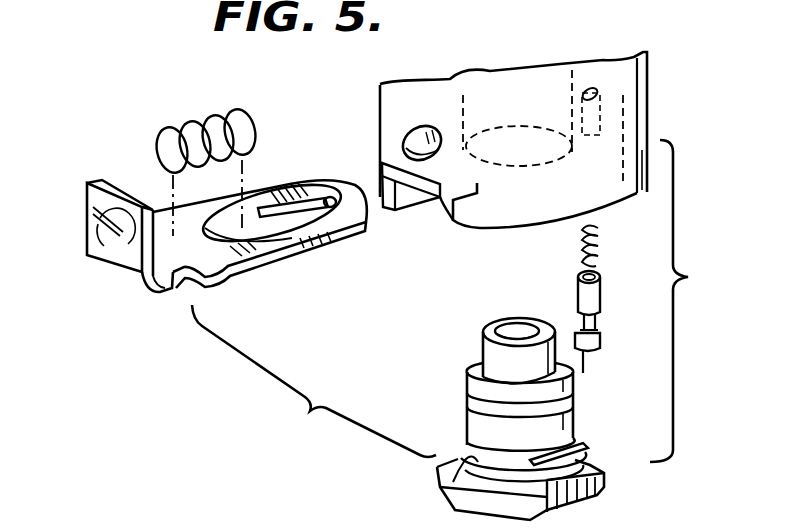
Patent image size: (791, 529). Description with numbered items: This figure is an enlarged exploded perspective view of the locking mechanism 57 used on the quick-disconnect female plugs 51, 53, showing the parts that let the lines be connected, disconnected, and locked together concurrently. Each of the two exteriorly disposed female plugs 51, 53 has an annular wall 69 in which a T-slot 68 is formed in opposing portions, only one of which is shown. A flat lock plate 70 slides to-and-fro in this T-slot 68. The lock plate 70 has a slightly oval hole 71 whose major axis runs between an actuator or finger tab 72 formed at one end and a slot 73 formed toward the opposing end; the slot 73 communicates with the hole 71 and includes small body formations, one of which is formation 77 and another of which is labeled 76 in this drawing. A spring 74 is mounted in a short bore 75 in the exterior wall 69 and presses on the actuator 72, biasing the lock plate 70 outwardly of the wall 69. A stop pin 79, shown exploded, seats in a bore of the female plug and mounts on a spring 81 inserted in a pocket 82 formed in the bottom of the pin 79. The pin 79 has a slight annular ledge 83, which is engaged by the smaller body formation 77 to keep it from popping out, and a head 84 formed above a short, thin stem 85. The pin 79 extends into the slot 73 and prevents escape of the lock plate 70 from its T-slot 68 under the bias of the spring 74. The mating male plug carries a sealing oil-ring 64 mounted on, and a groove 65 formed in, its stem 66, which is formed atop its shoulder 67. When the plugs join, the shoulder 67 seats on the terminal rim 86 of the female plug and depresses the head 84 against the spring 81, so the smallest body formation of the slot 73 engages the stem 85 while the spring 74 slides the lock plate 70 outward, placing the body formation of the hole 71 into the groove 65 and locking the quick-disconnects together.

The female plug 51 is at (405, 97).
The female plug 53 is at (513, 137).
The mechanism 57 is at (125, 317).
The sealing oil-ring 64 is at (470, 412).
The groove 65 is at (586, 442).
The stem 66 is at (470, 436).
The shoulder 67 is at (453, 482).
The T-slot 68 is at (663, 150).
The annular wall 69 is at (623, 93).
The lock plate 70 is at (217, 259).
The hole 71 is at (260, 210).
The actuator or finger tab 72 is at (92, 205).
The slot 73 is at (320, 220).
The spring 74 is at (174, 122).
The short bore 75 is at (422, 126).
The latch end 76 is at (333, 198).
The small body formation 77 is at (318, 215).
The stop pin 79 is at (560, 274).
The spring 81 is at (600, 239).
The pocket 82 is at (600, 279).
The annular ledge 83 is at (599, 321).
The head 84 is at (597, 338).
The stem 85 is at (596, 373).
The terminal rim 86 is at (679, 516).